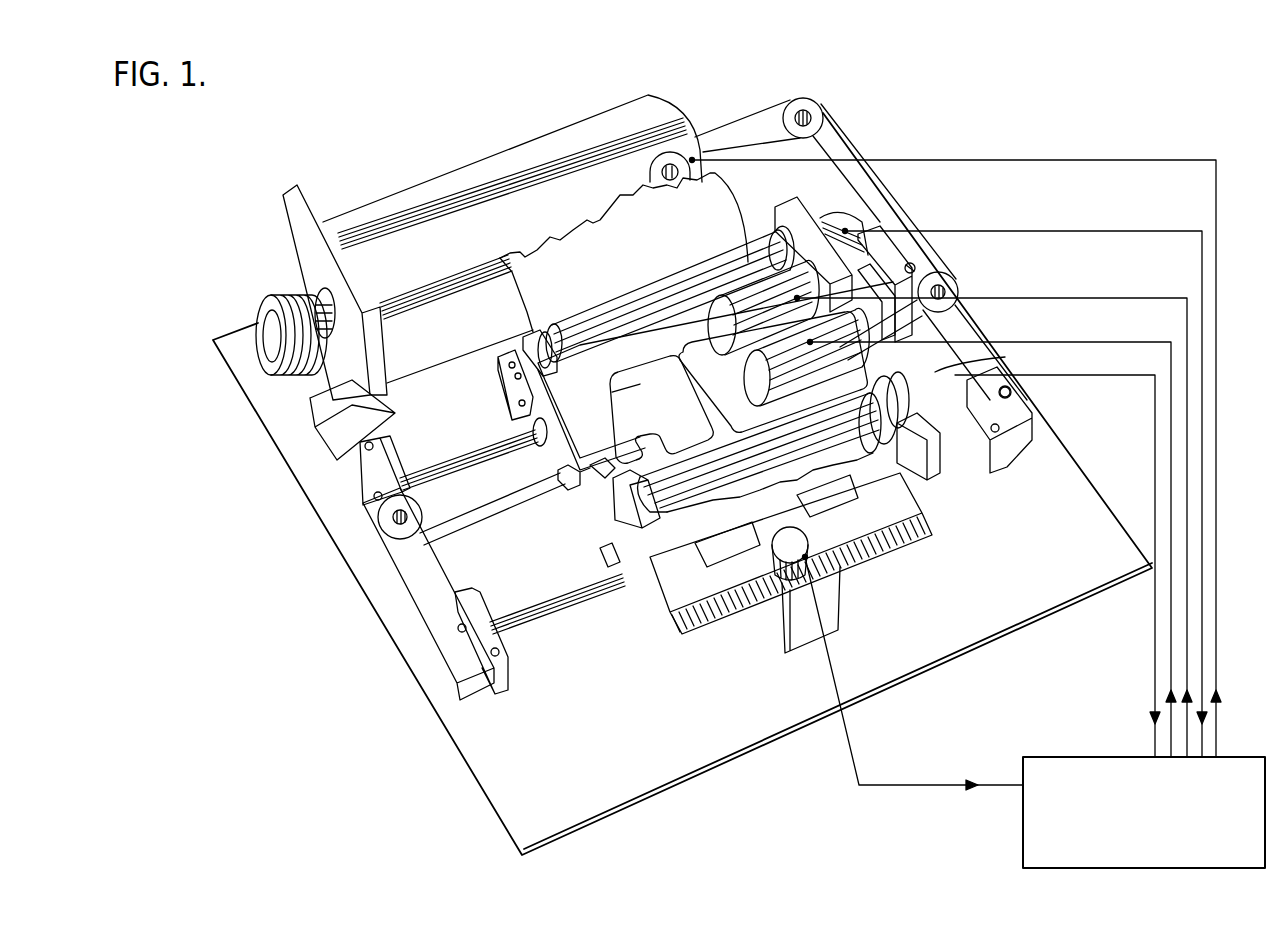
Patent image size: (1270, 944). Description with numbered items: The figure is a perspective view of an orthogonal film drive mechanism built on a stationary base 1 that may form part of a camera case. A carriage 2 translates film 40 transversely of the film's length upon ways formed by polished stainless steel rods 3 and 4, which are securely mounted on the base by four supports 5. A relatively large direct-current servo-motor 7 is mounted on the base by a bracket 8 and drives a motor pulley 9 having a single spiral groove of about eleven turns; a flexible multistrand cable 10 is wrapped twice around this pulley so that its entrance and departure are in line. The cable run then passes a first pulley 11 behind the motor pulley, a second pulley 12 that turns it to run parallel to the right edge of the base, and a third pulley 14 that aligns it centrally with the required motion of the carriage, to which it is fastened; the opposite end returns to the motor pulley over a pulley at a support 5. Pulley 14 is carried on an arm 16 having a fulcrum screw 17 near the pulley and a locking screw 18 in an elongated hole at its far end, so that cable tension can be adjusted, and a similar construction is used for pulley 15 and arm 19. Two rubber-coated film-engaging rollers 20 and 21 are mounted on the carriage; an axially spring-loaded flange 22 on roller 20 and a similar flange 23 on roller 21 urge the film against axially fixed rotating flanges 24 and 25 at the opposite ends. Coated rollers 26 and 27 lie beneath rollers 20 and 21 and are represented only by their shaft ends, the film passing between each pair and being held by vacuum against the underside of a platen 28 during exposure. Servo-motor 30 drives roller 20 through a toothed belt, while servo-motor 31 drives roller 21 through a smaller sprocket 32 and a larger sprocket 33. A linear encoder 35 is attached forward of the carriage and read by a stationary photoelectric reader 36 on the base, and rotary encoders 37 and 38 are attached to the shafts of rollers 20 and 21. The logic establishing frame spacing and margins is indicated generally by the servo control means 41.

The stationary base 1 is at (492, 790).
The carriage 2 is at (680, 368).
The polished stainless steel rod 3 is at (480, 452).
The polished stainless steel rod 4 is at (542, 611).
The support 5 is at (694, 530).
The servo-motor 7 is at (480, 248).
The bracket 8 is at (320, 279).
The motor pulley 9 is at (262, 310).
The flexible multistrand cable 10 is at (755, 122).
The first pulley 11 is at (295, 290).
The second pulley 12 is at (812, 138).
The third pulley 14 is at (958, 290).
The pulley 15 is at (412, 506).
The arm 16 is at (963, 320).
The fulcrum screw 17 is at (907, 266).
The locking screw 18 is at (1011, 392).
The arm 19 is at (438, 576).
The film-engaging roller 20 is at (648, 324).
The film-engaging roller 21 is at (773, 442).
The axially spring-loaded flange 22 is at (770, 248).
The axially spring-loaded flange 23 is at (866, 444).
The axially fixed rotating flange 24 is at (545, 338).
The axially fixed rotating flange 25 is at (640, 482).
The resiliently coated roller 26 is at (509, 393).
The coated roller 27 is at (604, 552).
The platen 28 is at (682, 418).
The servo-motor 30 is at (728, 338).
The servo-motor 31 is at (768, 392).
The smaller sprocket 32 is at (876, 302).
The larger sprocket 33 is at (918, 446).
The linear encoder 35 is at (876, 530).
The photoelectric reader 36 is at (897, 658).
The rotary encoder 37 is at (842, 220).
The rotary encoder 38 is at (1047, 551).
The film 40 is at (632, 256).
The servo control means 41 is at (1144, 812).